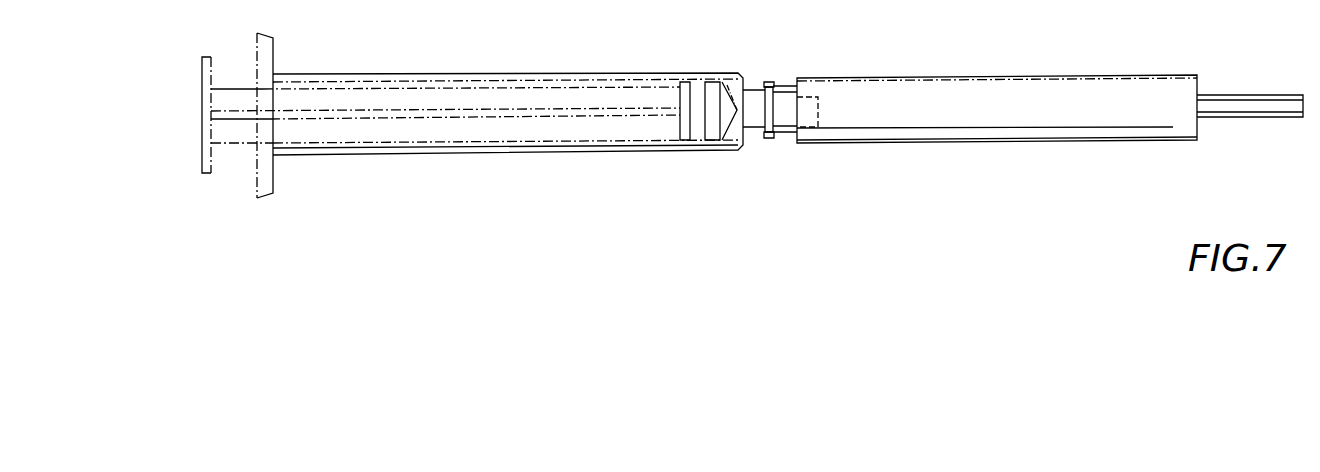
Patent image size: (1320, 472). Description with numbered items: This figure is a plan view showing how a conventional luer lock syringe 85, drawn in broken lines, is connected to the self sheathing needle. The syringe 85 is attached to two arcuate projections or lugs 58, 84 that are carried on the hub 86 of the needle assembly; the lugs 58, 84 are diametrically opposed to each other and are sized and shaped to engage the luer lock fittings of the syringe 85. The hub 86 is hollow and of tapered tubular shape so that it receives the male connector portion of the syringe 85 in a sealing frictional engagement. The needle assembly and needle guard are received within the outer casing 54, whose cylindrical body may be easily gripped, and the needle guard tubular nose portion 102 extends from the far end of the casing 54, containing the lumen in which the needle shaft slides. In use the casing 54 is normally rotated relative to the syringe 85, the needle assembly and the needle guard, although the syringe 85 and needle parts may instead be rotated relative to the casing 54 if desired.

The luer lock syringe 85 is at (447, 82).
The arcuate projection or lug 58 is at (770, 82).
The arcuate projection or lug 84 is at (771, 140).
The hub 86 is at (786, 89).
The casing member 54 is at (964, 78).
The needle guard tubular nose portion 102 is at (1248, 94).